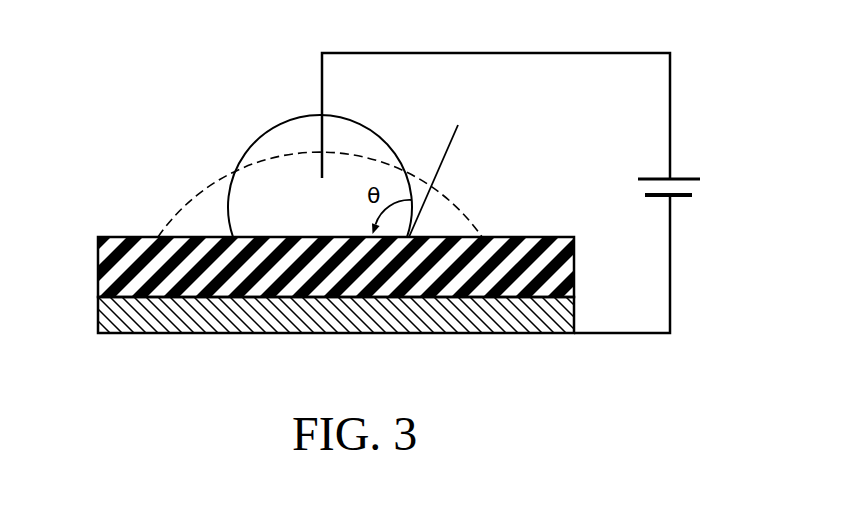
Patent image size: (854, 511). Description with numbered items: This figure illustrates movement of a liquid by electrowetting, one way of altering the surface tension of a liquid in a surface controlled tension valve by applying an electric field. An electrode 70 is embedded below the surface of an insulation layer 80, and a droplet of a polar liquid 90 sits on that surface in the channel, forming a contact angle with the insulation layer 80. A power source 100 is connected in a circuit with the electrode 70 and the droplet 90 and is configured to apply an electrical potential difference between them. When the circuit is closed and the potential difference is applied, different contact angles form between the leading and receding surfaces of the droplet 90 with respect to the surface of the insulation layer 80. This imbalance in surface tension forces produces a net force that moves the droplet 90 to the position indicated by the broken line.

The electrode 70 is at (98, 319).
The insulation layer 80 is at (98, 258).
The droplet of polar liquid 90 is at (268, 128).
The power source 100 is at (682, 133).